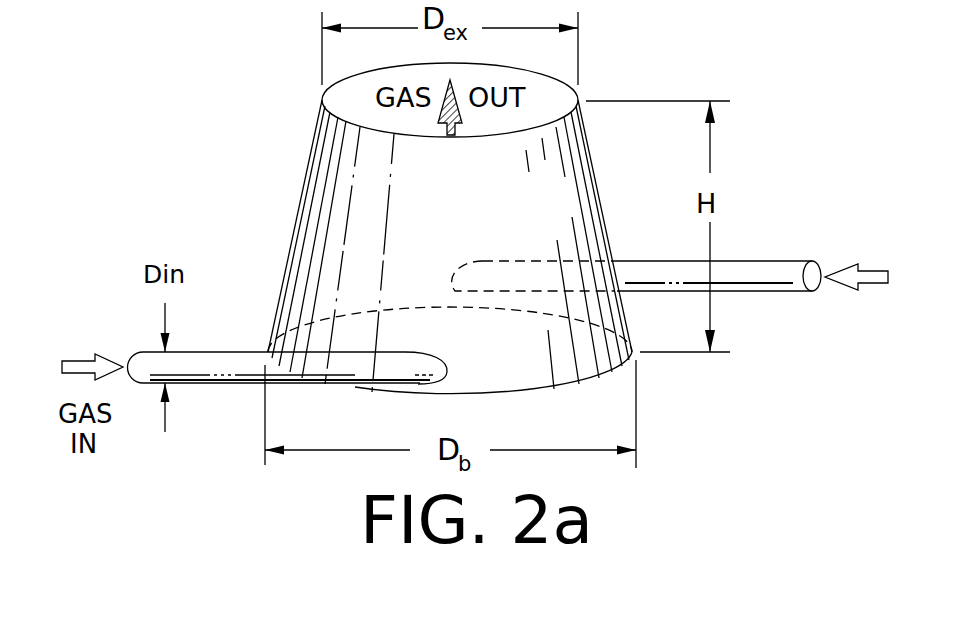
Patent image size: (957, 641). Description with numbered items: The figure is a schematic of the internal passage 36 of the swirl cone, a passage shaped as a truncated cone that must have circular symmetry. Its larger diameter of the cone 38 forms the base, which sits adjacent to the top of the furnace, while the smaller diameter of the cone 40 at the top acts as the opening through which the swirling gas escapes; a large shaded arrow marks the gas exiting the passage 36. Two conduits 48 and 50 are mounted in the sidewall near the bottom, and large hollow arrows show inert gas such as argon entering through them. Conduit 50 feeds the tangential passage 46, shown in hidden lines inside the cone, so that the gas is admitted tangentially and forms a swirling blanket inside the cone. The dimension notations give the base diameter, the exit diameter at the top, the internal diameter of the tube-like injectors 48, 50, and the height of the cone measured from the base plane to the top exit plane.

The internal passage 36 is at (600, 193).
The larger diameter of the cone 38 is at (602, 378).
The smaller diameter of the cone 40 is at (551, 80).
The tangential passage 46 is at (485, 258).
The conduit 48 is at (212, 385).
The conduit 50 is at (743, 262).